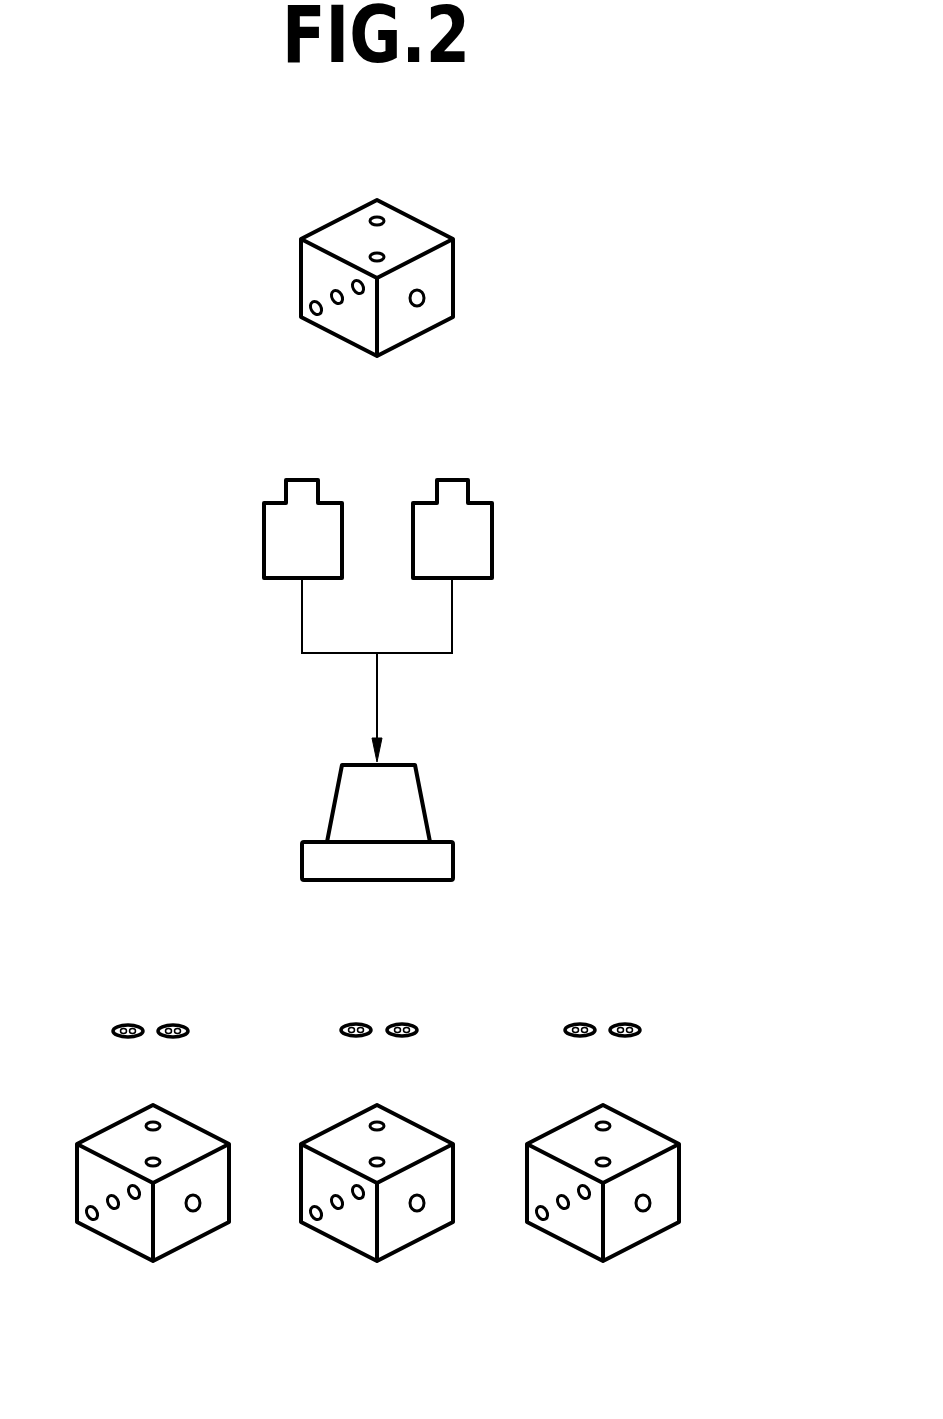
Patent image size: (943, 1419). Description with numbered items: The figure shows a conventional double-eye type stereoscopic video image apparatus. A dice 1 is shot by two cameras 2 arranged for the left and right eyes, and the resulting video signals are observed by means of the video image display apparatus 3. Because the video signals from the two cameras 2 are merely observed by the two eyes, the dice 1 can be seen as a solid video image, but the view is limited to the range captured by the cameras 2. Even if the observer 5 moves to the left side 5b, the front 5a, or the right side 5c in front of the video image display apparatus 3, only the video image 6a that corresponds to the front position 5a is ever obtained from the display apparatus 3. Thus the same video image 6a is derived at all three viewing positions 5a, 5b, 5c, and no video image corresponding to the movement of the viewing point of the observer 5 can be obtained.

The dice 1 is at (448, 238).
The cameras 2 is at (494, 522).
The video image display apparatus 3 is at (425, 802).
The observer 5 is at (468, 977).
The front position 5a is at (417, 1027).
The left side position 5b is at (188, 1028).
The right side position 5c is at (611, 992).
The video image 6a is at (160, 1260).